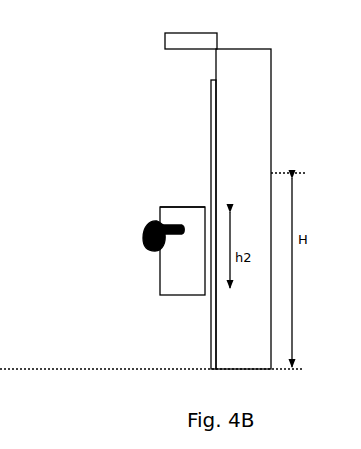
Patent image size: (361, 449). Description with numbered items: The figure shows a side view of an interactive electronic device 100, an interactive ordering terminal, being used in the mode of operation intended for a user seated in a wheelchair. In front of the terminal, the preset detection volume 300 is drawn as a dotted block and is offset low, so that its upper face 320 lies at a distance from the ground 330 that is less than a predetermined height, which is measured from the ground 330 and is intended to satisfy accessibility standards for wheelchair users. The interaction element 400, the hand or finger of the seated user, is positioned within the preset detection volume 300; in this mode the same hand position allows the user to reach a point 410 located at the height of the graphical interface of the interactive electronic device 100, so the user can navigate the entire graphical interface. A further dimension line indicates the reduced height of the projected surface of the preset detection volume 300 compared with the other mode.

The interactive electronic device 100 is at (133, 53).
The point 410 is at (209, 90).
The upper face 320 is at (183, 206).
The interaction element 400 is at (138, 232).
The preset detection volume 300 is at (176, 278).
The ground 330 is at (95, 367).